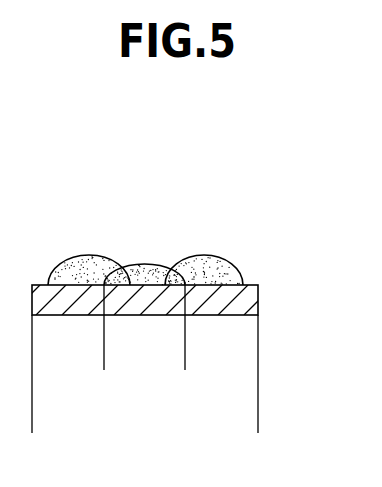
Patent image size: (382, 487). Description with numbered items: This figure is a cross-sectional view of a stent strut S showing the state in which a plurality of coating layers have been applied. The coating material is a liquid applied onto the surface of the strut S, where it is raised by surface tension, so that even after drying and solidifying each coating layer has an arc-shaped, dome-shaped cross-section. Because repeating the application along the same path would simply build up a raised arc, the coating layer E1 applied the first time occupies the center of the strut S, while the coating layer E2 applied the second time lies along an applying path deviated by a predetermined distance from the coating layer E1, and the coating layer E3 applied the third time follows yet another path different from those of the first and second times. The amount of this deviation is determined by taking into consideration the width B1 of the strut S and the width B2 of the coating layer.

The strut S is at (240, 313).
The coating layer at the first time E1 is at (146, 270).
The coating layer at the second time E2 is at (87, 262).
The coating layer at the third time E3 is at (204, 267).
The width of the strut B1 is at (258, 428).
The width of the coating layer B2 is at (185, 360).